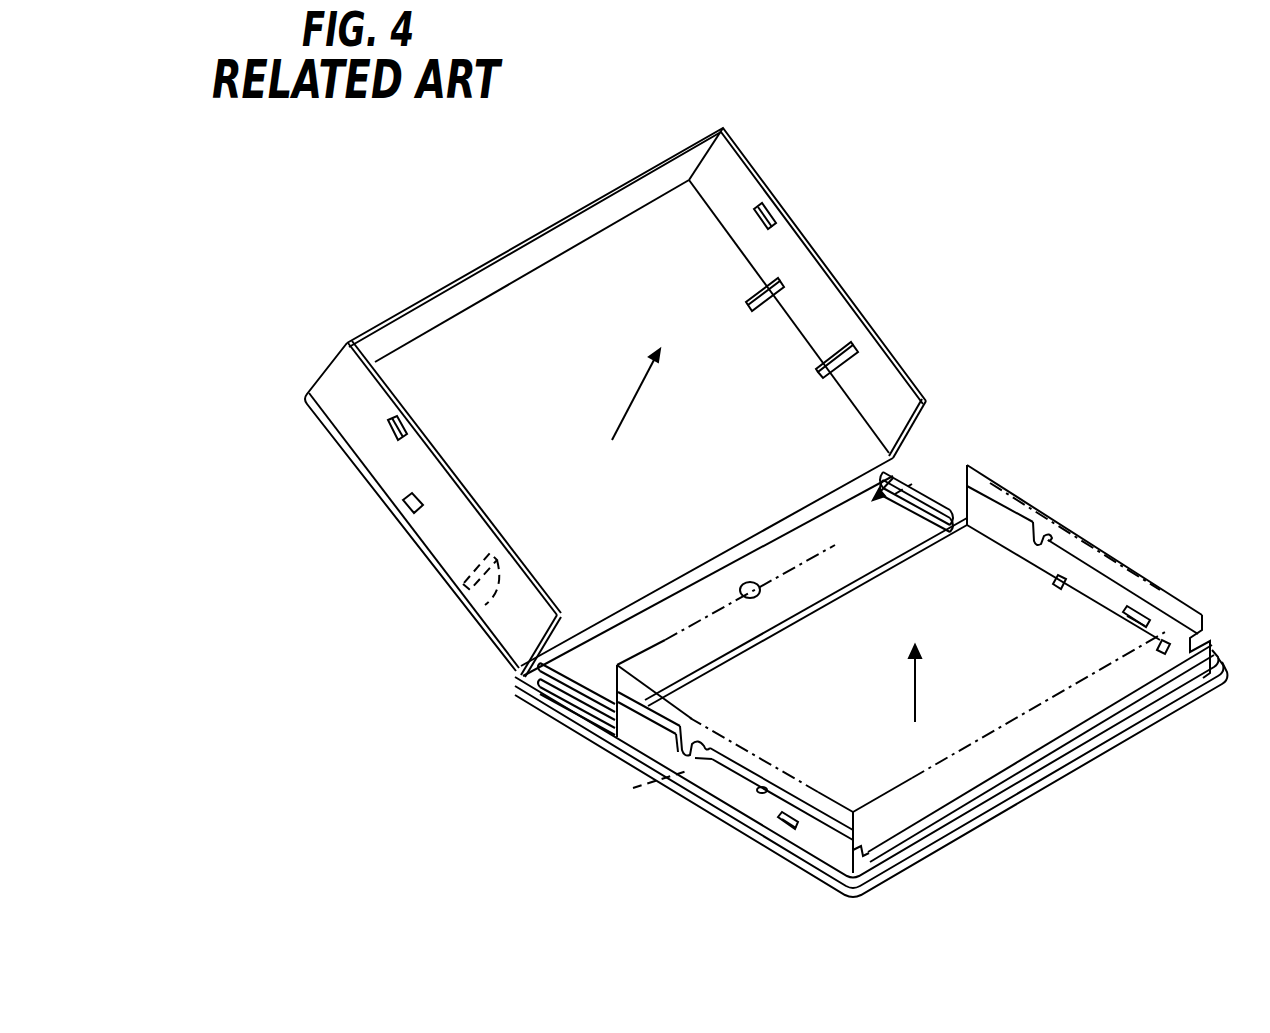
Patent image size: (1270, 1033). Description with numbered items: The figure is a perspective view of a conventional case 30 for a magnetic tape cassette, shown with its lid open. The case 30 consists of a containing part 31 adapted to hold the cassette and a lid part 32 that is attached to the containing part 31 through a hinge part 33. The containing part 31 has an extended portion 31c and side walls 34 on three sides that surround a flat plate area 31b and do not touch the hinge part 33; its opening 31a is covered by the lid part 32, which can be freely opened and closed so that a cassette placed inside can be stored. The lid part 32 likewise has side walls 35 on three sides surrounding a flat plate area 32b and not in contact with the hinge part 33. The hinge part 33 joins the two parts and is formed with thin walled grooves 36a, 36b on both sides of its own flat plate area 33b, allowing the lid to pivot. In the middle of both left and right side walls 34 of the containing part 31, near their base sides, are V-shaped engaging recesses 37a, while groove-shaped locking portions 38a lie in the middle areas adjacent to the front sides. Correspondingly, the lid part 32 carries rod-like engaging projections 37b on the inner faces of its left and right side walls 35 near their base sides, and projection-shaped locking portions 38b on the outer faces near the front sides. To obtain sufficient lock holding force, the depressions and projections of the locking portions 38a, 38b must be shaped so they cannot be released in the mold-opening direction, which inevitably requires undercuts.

The case for the magnetic tape cassette 30 is at (1036, 340).
The containing part 31 is at (1005, 826).
The opening 31a is at (1076, 633).
The flat plate area 31b is at (1057, 785).
The extended portion 31c is at (1153, 700).
The lid part 32 is at (523, 236).
The flat plate area 32b is at (392, 528).
The hinge part 33 is at (918, 473).
The flat plate area 33b is at (605, 665).
The side walls 34 is at (1095, 556).
The side walls 35 is at (832, 265).
The thin walled groove 36a is at (832, 600).
The thin walled groove 36b is at (750, 547).
The V-shaped engaging recess 37a is at (1036, 528).
The rod-like engaging projection 37b is at (848, 368).
The locking portion 38a is at (1165, 595).
The locking portion 38b is at (768, 207).